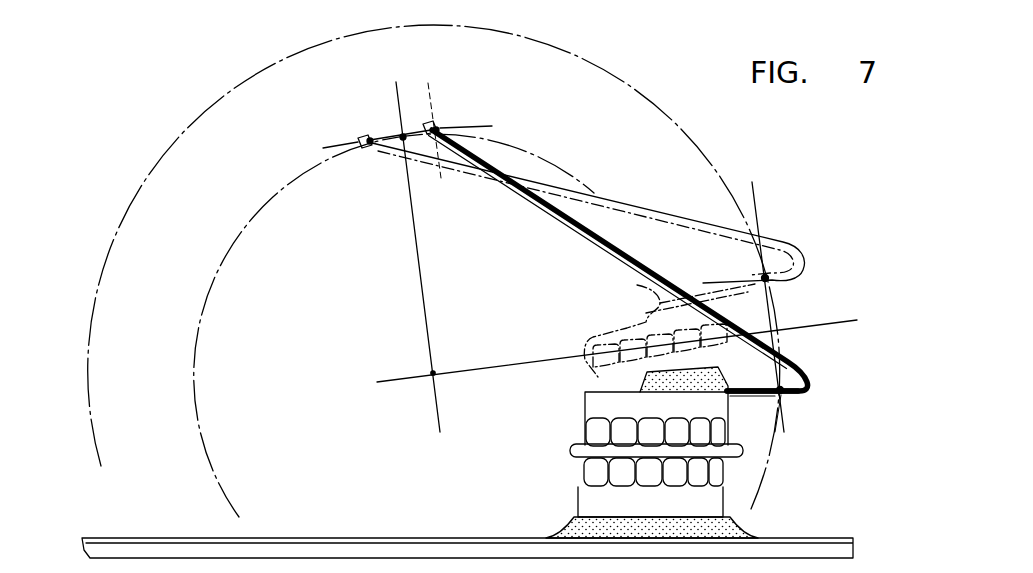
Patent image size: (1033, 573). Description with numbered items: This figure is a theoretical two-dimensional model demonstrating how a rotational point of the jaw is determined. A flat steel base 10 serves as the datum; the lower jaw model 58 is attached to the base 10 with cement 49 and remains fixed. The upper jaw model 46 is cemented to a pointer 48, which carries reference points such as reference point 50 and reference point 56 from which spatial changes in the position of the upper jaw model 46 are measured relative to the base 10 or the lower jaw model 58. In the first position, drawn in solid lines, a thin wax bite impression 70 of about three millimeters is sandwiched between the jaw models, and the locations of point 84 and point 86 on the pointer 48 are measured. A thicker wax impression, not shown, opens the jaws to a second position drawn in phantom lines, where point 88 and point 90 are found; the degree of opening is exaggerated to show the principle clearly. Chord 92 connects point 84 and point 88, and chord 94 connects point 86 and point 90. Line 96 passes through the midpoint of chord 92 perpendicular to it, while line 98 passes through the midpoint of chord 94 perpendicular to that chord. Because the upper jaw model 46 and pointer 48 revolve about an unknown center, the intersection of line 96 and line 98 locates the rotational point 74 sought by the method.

The flat steel base 10 is at (403, 537).
The upper jaw model 46 is at (727, 408).
The pointer 48 is at (568, 230).
The cement 49 is at (637, 285).
The reference point 50 is at (786, 395).
The reference point 56 is at (436, 124).
The lower jaw model 58 is at (722, 497).
The thin wax bite impression 70 is at (571, 449).
The rotational point 74 is at (433, 373).
The point 84 is at (781, 391).
The point 86 is at (440, 126).
The point 88 is at (766, 278).
The point 90 is at (360, 148).
The chord 92 is at (776, 313).
The chord 94 is at (403, 136).
The line 96 is at (515, 369).
The line 98 is at (418, 264).